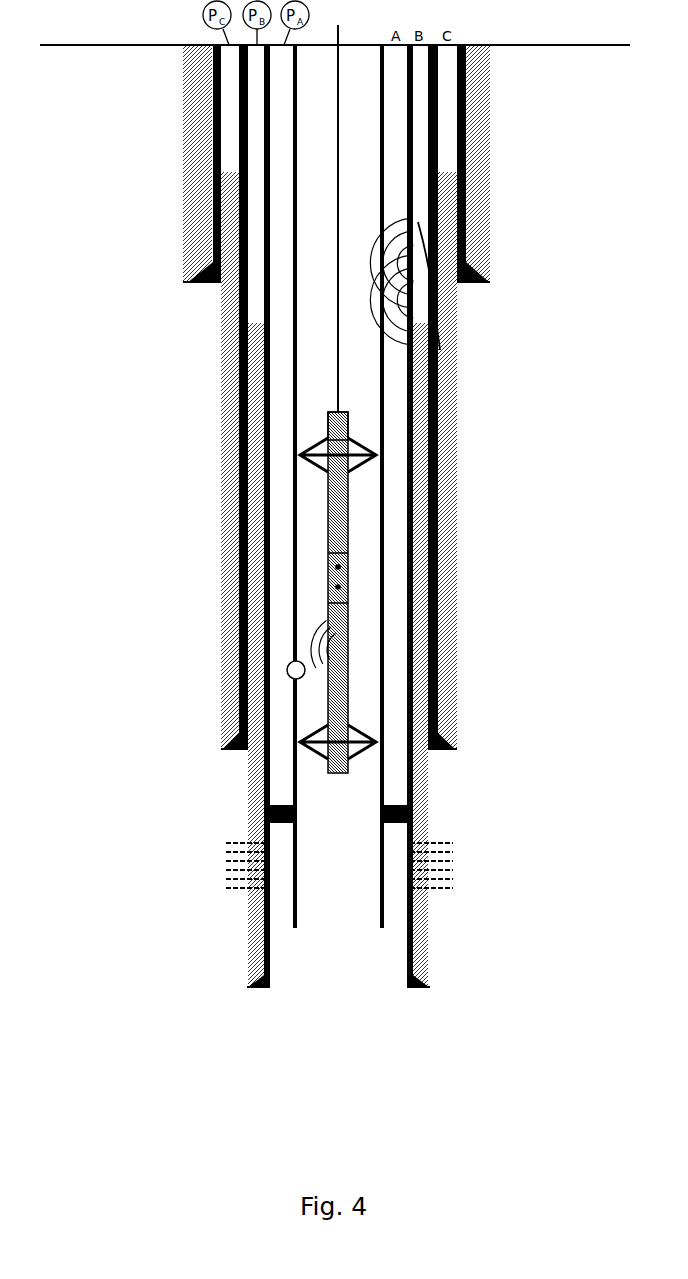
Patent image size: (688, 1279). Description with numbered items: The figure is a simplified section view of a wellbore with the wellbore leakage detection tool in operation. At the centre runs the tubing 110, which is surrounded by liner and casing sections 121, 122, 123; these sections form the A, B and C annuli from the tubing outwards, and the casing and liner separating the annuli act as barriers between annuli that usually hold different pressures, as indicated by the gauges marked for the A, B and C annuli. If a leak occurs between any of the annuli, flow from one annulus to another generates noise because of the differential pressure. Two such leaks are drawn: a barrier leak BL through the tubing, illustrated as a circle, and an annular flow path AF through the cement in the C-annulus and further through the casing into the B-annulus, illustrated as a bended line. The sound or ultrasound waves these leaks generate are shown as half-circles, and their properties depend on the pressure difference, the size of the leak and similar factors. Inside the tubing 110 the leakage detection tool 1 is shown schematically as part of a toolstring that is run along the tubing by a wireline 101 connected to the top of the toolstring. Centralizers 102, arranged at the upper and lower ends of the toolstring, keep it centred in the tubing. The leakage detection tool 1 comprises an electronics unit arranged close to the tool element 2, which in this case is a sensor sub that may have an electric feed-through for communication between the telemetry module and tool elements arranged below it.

The leakage detection tool 1 is at (327, 515).
The tool element 2 is at (327, 577).
The wireline 101 is at (338, 410).
The centralizers 102 is at (312, 447).
The tubing 110 is at (295, 355).
The liner and casing section 121 is at (266, 283).
The liner and casing section 122 is at (240, 225).
The liner and casing section 123 is at (217, 166).
The barrier leak BL is at (288, 667).
The annular flow path AF is at (435, 283).